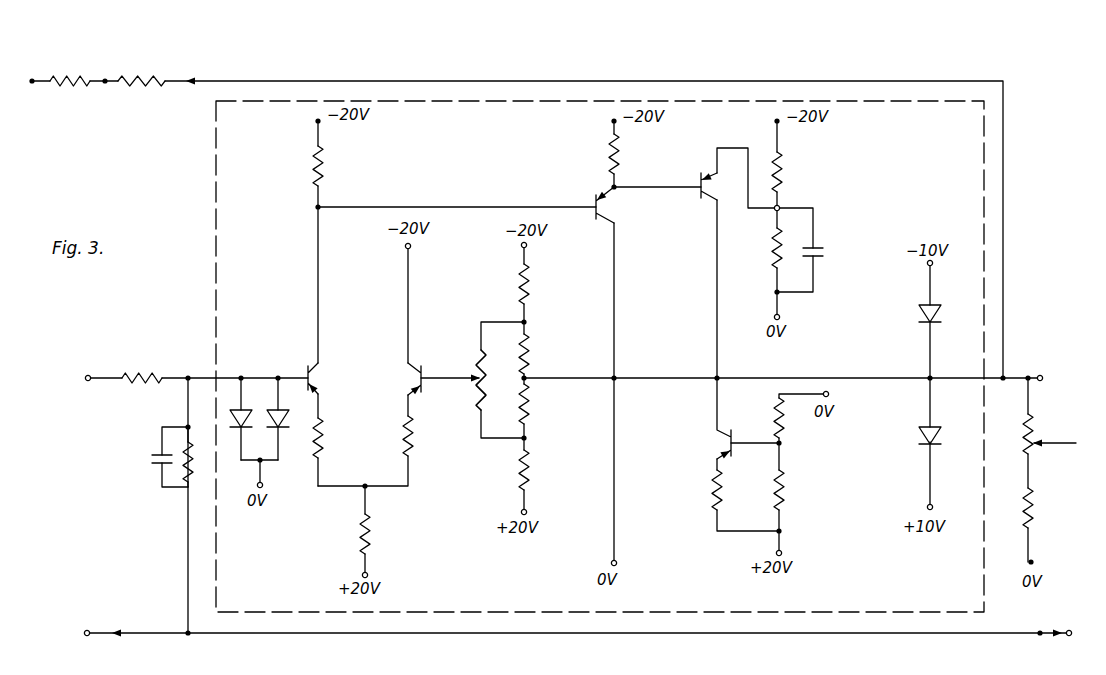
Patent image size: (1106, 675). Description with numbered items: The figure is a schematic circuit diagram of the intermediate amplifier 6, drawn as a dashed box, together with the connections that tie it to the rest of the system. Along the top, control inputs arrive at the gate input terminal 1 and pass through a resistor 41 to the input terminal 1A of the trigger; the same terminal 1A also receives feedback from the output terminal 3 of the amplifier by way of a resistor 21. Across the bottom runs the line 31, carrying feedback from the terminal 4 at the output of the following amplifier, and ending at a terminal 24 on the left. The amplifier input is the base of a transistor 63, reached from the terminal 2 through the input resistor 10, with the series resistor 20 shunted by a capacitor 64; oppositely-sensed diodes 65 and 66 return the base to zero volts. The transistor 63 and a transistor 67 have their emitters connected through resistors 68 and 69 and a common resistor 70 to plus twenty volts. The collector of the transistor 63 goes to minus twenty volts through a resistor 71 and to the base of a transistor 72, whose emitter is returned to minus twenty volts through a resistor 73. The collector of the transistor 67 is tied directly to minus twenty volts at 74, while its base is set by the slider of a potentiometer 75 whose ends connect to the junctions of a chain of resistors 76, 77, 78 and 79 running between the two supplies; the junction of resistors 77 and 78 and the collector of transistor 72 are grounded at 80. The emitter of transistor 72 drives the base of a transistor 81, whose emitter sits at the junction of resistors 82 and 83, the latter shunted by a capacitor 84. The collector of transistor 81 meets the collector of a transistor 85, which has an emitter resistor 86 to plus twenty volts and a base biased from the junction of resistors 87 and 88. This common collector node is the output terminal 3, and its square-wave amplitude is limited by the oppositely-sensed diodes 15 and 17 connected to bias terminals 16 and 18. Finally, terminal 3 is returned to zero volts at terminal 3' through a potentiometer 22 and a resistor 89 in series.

The gate input terminal 1 is at (32, 79).
The resistor 41 is at (75, 78).
The resistor 21 is at (141, 78).
The input terminal 1A is at (105, 84).
The intermediate amplifier 6 is at (235, 172).
The terminal 2 is at (87, 376).
The input resistor 10 is at (148, 376).
The capacitor 64 is at (156, 452).
The series resistor 20 is at (178, 476).
The diode 65 is at (248, 416).
The diode 66 is at (282, 428).
The transistor 63 is at (306, 368).
The resistor 68 is at (323, 448).
The resistor 69 is at (413, 448).
The common resistor 70 is at (369, 531).
The transistor 67 is at (418, 390).
The terminal 74 is at (406, 247).
The potentiometer 75 is at (478, 358).
The resistor 76 is at (530, 283).
The resistor 77 is at (530, 344).
The resistor 78 is at (530, 406).
The resistor 79 is at (530, 464).
The resistor 71 is at (324, 170).
The transistor 72 is at (592, 200).
The resistor 73 is at (620, 156).
The terminal 80 is at (615, 562).
The transistor 81 is at (699, 172).
The resistor 82 is at (784, 172).
The resistor 83 is at (773, 249).
The capacitor 84 is at (822, 249).
The transistor 85 is at (723, 432).
The resistor 86 is at (711, 496).
The resistor 87 is at (782, 439).
The resistor 88 is at (784, 497).
The terminal 18 is at (928, 264).
The diode 17 is at (920, 313).
The diode 15 is at (918, 435).
The terminal 16 is at (928, 508).
The output terminal 3 is at (1034, 361).
The potentiometer 22 is at (1038, 438).
The resistor 89 is at (1034, 514).
The terminal 3' is at (1047, 551).
The line 31 is at (1039, 631).
The terminal 4 is at (1066, 631).
The terminal 24 is at (86, 631).